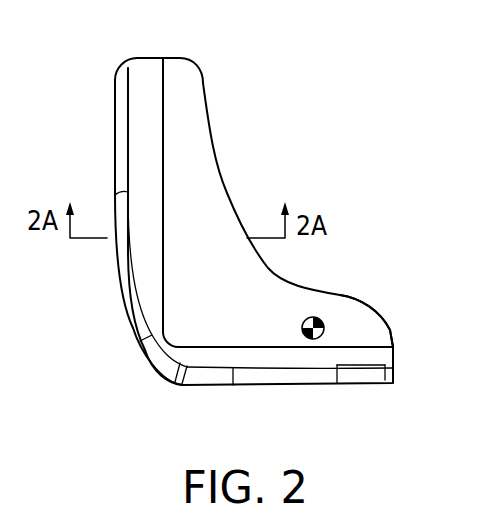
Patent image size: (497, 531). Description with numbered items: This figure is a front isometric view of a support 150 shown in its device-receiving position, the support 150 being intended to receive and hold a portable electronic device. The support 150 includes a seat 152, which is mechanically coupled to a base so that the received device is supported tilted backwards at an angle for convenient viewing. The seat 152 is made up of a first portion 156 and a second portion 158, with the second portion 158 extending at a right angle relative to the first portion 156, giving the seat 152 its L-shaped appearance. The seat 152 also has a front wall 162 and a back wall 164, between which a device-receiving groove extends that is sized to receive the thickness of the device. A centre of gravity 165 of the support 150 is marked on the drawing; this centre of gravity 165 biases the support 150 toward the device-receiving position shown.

The support 150 is at (93, 135).
The front wall 162 is at (148, 78).
The second portion 158 is at (118, 205).
The first portion 156 is at (278, 380).
The seat 152 is at (318, 376).
The back wall 164 is at (363, 322).
The centre of gravity 165 is at (320, 321).